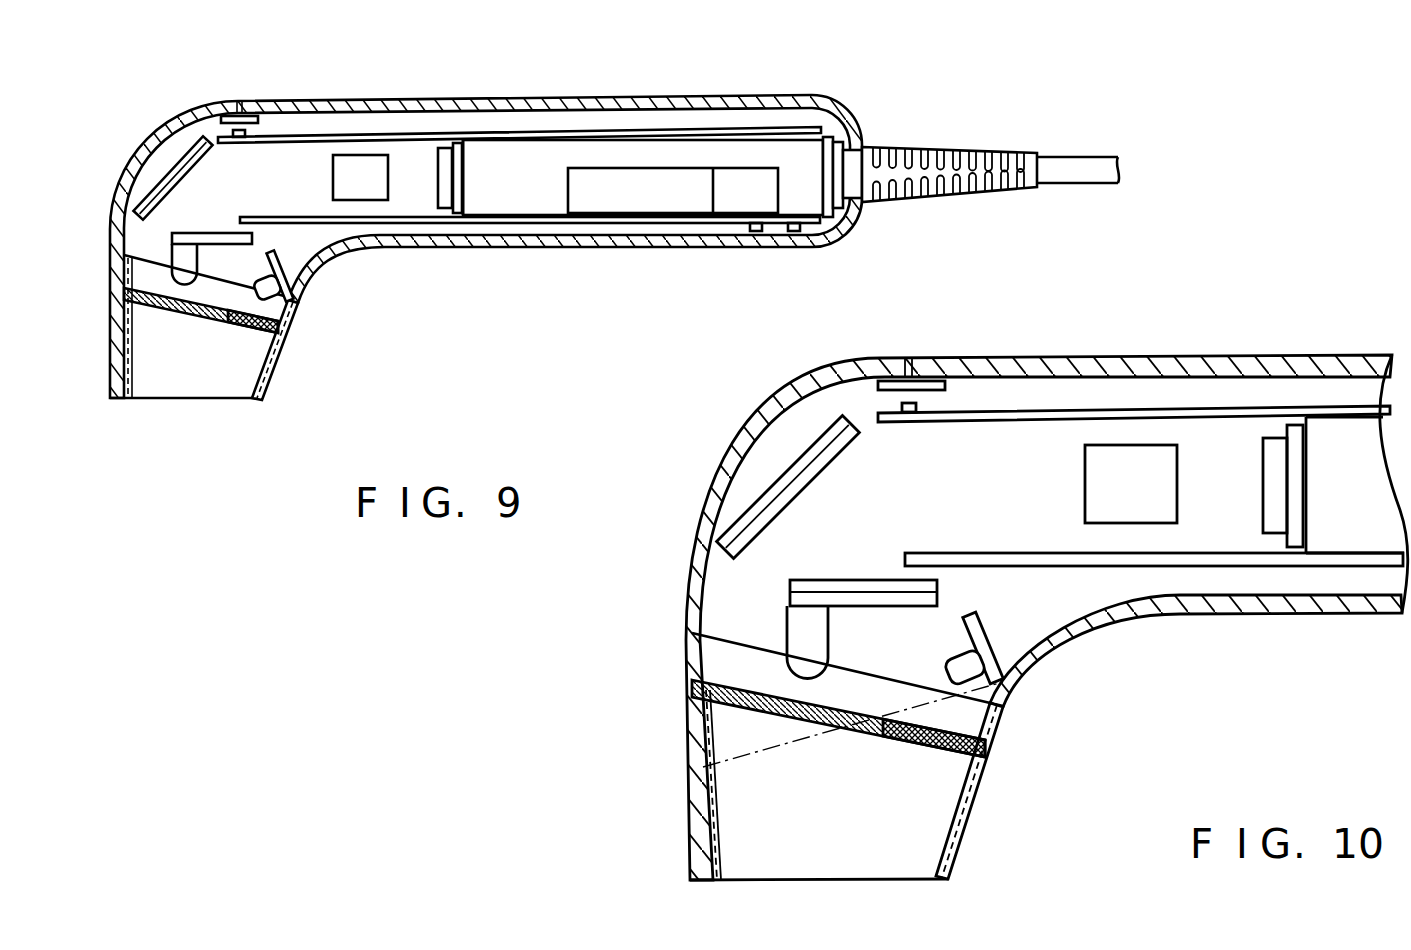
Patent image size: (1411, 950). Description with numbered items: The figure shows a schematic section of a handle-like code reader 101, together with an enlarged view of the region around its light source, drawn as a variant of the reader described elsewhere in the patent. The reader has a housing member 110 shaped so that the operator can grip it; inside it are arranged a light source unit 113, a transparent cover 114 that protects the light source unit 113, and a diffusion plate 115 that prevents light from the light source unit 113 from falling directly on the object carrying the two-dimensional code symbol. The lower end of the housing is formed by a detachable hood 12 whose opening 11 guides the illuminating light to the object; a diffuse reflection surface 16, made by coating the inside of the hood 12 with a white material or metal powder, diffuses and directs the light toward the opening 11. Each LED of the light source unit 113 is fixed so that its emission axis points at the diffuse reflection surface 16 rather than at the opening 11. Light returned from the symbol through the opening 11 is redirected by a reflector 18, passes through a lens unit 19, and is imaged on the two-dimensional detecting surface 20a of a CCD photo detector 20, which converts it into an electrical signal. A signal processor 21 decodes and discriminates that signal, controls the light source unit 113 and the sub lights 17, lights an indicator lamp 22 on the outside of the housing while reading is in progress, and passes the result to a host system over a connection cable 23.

In FIG. 9, the code reader 101 is at (766, 89).
In FIG. 10, the code reader 101 is at (1248, 338).
In FIG. 9, the housing member 110 is at (607, 97).
In FIG. 10, the housing member 110 is at (1157, 360).
In FIG. 9, the opening 11 is at (182, 402).
In FIG. 10, the opening 11 is at (860, 886).
In FIG. 9, the hood 12 is at (268, 390).
In FIG. 10, the hood 12 is at (960, 838).
In FIG. 9, the diffuse reflection surface 16 is at (132, 377).
In FIG. 10, the diffuse reflection surface 16 is at (718, 848).
In FIG. 9, the sub lights 17 is at (176, 257).
In FIG. 10, the sub lights 17 is at (790, 622).
In FIG. 9, the reflector 18 is at (178, 168).
In FIG. 10, the reflector 18 is at (806, 470).
In FIG. 9, the lens unit 19 is at (333, 180).
In FIG. 10, the lens unit 19 is at (1086, 460).
In FIG. 9, the photo detector 20 is at (438, 165).
In FIG. 10, the photo detector 20 is at (1263, 466).
In FIG. 9, the detecting surface 20a is at (447, 200).
In FIG. 10, the detecting surface 20a is at (1264, 520).
In FIG. 9, the signal processor 21 is at (628, 224).
In FIG. 10, the signal processor 21 is at (1031, 568).
In FIG. 9, the indicator lamp 22 is at (242, 138).
In FIG. 10, the indicator lamp 22 is at (896, 405).
In FIG. 9, the connection cable 23 is at (1075, 160).
In FIG. 9, the light source unit 113 is at (295, 257).
In FIG. 9, the transparent cover 114 is at (200, 322).
In FIG. 10, the transparent cover 114 is at (913, 752).
In FIG. 9, the diffusion plate 115 is at (292, 318).
In FIG. 10, the diffusion plate 115 is at (996, 740).